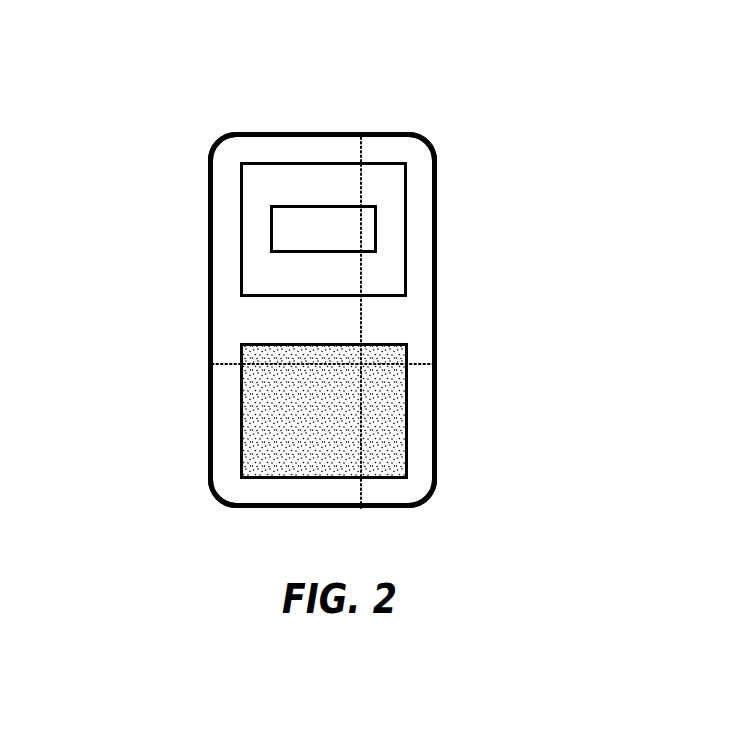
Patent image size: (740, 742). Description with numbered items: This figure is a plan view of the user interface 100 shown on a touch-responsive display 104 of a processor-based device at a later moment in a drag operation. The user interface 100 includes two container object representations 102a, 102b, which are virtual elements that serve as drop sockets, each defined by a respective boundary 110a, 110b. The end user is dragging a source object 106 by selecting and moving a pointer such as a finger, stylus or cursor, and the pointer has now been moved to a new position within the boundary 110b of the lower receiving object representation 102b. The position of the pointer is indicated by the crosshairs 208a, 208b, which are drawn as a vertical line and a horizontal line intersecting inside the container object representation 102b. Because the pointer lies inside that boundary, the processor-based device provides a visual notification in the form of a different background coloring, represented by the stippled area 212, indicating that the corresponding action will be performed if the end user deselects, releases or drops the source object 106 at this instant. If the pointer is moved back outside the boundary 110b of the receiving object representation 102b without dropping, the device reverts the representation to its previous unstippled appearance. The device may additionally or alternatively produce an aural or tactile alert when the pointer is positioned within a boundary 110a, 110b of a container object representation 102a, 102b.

The user interface 100 is at (235, 148).
The touch-responsive display 104 is at (438, 175).
The source object 106 is at (377, 238).
The container object representation 102a is at (387, 272).
The container object representation 102b is at (408, 393).
The boundary 110a is at (388, 162).
The boundary 110b is at (407, 471).
The crosshairs 208a is at (360, 149).
The crosshairs 208b is at (227, 364).
The stippled area 212 is at (383, 447).